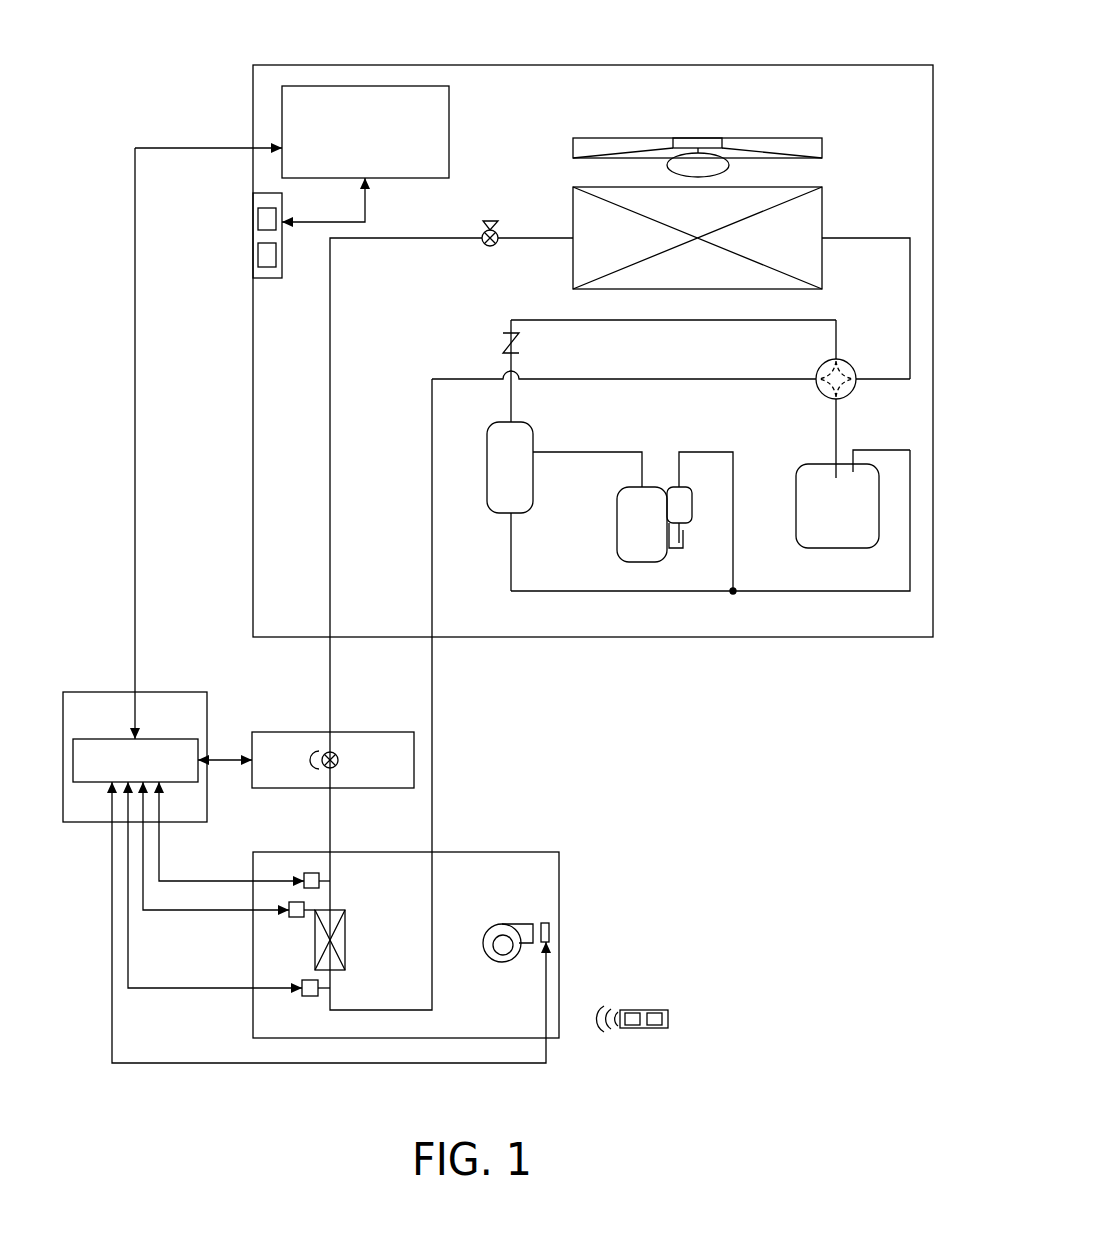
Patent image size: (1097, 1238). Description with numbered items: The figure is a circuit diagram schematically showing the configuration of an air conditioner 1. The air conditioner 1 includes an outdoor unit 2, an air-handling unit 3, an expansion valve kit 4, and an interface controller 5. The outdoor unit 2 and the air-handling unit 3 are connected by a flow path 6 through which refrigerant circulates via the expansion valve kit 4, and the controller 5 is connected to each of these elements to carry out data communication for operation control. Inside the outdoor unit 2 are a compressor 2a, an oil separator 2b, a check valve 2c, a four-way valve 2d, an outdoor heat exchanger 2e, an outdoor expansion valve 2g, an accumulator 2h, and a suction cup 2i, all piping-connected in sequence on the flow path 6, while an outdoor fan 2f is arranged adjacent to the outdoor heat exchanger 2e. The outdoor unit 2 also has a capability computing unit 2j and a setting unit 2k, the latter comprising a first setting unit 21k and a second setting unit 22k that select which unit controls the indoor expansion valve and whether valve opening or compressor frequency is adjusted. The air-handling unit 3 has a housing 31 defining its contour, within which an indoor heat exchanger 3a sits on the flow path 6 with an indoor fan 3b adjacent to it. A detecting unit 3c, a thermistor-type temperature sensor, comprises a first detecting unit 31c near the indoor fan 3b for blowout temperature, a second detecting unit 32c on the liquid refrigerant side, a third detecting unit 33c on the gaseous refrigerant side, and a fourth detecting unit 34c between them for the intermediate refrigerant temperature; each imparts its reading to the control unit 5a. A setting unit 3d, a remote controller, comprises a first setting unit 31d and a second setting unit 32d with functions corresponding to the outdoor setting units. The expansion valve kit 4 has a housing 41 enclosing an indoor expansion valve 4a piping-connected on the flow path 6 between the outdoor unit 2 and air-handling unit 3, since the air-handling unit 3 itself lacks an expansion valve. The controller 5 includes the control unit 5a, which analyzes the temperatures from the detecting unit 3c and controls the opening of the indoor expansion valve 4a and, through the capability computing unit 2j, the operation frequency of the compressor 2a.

The air conditioner 1 is at (870, 52).
The outdoor unit 2 is at (748, 647).
The compressor 2a is at (617, 535).
The oil separator 2b is at (533, 430).
The check valve 2c is at (503, 343).
The four-way valve 2d is at (854, 395).
The outdoor heat exchanger 2e is at (822, 205).
The outdoor fan 2f is at (822, 146).
The outdoor expansion valve 2g is at (490, 218).
The accumulator 2h is at (812, 465).
The suction cup 2i is at (683, 530).
The capability computing unit 2j is at (449, 130).
The setting unit 2k is at (268, 278).
The first setting unit 21k is at (258, 220).
The second setting unit 22k is at (258, 256).
The air-handling unit 3 is at (563, 856).
The indoor heat exchanger 3a is at (347, 937).
The indoor fan 3b is at (490, 960).
The detecting unit 3c is at (306, 873).
The setting unit 3d is at (642, 1021).
The housing 31 is at (522, 889).
The first detecting unit 31c is at (543, 902).
The second detecting unit 32c is at (291, 851).
The third detecting unit 33c is at (310, 997).
The fourth detecting unit 34c is at (296, 918).
The first setting unit 31d is at (632, 1028).
The second setting unit 32d is at (655, 1028).
The expansion valve kit 4 is at (333, 725).
The housing 41 is at (283, 732).
The indoor expansion valve 4a is at (338, 760).
The interface controller 5 is at (172, 690).
The control unit 5a is at (160, 739).
The flow path 6 is at (330, 341).